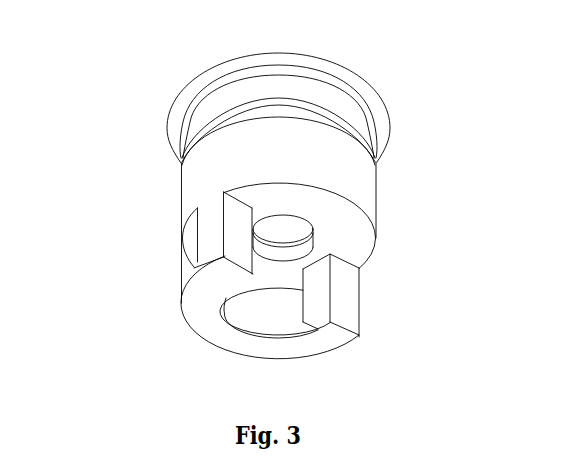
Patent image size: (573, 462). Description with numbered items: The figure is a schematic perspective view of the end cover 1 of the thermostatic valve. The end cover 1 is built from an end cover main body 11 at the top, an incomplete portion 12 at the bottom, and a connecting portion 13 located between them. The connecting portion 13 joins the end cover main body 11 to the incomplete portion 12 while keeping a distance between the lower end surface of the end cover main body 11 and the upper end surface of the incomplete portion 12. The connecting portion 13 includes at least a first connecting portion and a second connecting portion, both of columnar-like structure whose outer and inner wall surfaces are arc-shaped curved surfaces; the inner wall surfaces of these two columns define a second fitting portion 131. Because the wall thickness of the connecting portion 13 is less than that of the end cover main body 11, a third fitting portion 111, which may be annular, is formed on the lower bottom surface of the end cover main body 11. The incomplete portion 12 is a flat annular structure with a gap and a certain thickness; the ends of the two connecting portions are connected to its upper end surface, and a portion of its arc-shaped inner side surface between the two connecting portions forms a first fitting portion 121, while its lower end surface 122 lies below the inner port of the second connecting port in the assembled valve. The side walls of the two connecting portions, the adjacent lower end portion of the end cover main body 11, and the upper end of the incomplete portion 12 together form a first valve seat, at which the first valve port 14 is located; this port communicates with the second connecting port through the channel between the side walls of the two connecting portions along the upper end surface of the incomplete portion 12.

The end cover 1 is at (397, 56).
The end cover main body 11 is at (235, 152).
The third fitting portion 111 is at (278, 267).
The incomplete portion 12 is at (182, 288).
The first fitting portion 121 is at (315, 326).
The lower end surface 122 is at (230, 336).
The connecting portion 13 is at (207, 235).
The second fitting portion 131 is at (318, 298).
The first valve port 14 is at (250, 305).